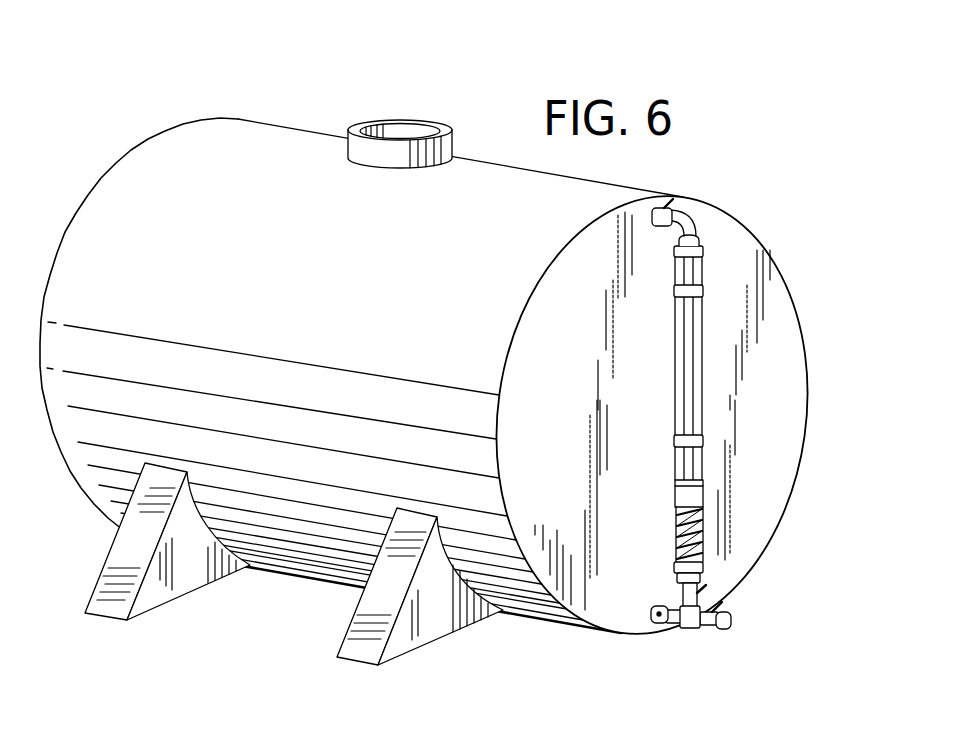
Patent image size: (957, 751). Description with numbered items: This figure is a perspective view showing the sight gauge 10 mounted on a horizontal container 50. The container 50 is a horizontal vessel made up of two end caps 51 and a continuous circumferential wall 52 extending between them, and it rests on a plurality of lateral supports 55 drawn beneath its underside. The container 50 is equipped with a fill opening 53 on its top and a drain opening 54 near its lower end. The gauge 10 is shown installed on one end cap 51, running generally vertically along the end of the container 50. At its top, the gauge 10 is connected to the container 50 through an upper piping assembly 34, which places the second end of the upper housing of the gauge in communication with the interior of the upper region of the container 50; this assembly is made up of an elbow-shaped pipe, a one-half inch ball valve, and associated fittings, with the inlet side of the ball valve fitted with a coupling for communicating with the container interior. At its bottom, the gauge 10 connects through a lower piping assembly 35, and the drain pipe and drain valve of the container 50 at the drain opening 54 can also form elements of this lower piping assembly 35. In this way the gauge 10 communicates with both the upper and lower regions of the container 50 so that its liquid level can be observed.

The gauge 10 is at (708, 388).
The upper piping assembly 34 is at (695, 214).
The lower piping assembly 35 is at (683, 626).
The horizontal container 50 is at (778, 250).
The end caps 51 is at (84, 199).
The continuous circumferential wall 52 is at (326, 291).
The fill opening 53 is at (405, 128).
The drain opening 54 is at (651, 612).
The lateral supports 55 is at (182, 582).